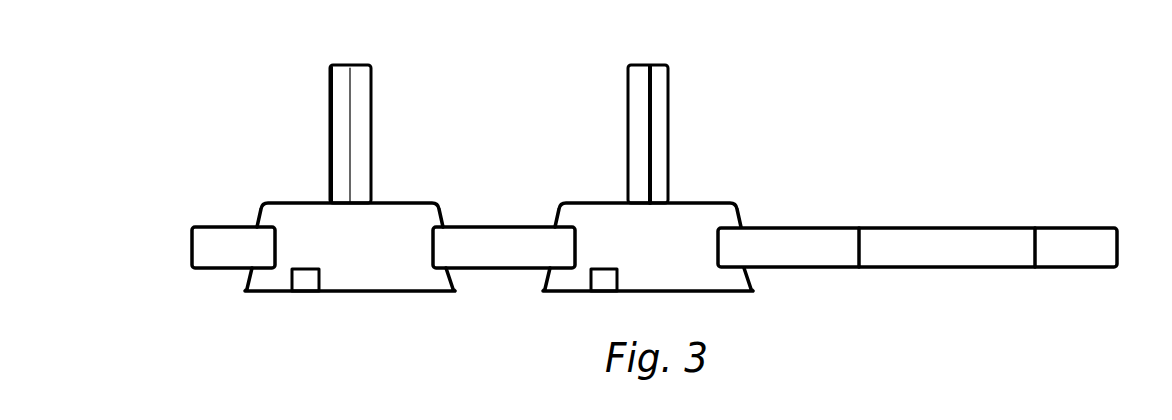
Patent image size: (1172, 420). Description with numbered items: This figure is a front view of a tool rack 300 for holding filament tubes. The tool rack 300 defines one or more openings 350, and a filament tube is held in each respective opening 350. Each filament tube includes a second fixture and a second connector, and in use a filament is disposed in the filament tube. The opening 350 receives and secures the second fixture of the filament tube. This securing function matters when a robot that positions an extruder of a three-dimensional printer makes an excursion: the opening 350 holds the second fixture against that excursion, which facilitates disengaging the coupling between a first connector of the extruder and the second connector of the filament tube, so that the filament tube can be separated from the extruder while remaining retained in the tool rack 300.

The tool rack 300 is at (991, 91).
The opening 350 is at (945, 248).